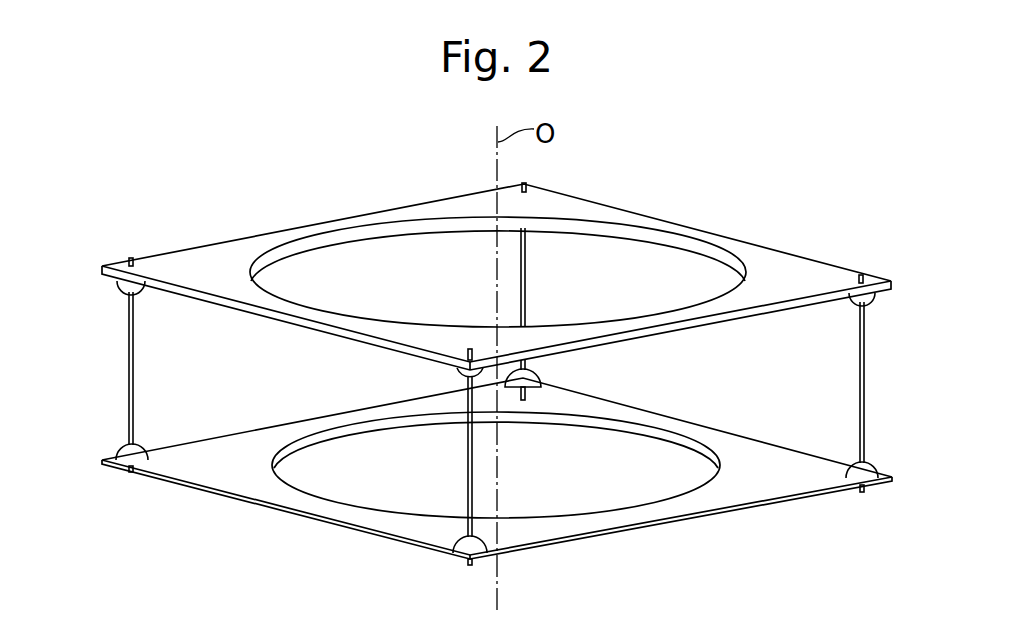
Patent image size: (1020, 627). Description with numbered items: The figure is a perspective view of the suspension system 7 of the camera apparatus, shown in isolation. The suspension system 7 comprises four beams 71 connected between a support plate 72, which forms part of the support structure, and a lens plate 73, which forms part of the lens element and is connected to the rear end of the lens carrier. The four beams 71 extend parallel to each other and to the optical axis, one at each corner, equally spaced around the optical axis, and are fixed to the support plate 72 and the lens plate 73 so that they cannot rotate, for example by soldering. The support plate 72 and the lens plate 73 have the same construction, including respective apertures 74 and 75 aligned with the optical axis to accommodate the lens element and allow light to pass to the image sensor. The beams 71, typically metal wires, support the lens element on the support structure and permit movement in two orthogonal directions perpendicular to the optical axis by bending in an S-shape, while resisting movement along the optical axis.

The suspension system 7 is at (294, 210).
The beams 71 is at (528, 282).
The support plate 72 is at (778, 268).
The lens plate 73 is at (787, 487).
The aperture 74 is at (677, 232).
The aperture 75 is at (680, 495).